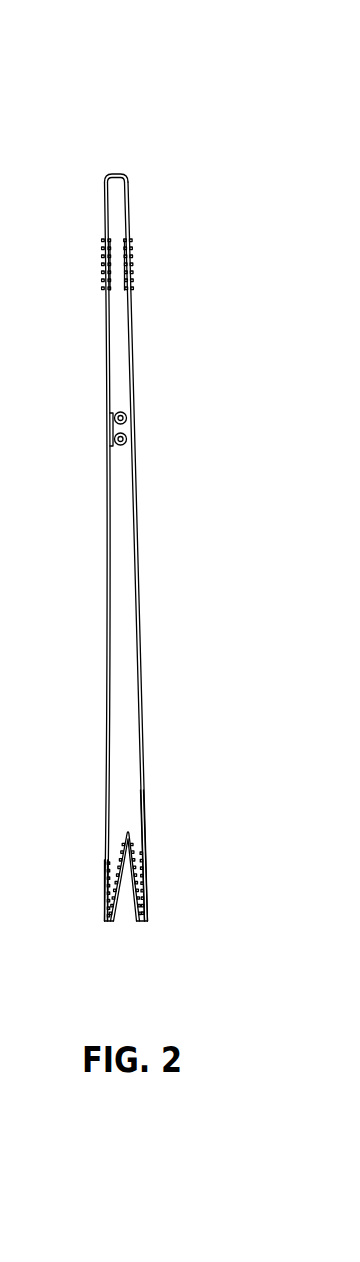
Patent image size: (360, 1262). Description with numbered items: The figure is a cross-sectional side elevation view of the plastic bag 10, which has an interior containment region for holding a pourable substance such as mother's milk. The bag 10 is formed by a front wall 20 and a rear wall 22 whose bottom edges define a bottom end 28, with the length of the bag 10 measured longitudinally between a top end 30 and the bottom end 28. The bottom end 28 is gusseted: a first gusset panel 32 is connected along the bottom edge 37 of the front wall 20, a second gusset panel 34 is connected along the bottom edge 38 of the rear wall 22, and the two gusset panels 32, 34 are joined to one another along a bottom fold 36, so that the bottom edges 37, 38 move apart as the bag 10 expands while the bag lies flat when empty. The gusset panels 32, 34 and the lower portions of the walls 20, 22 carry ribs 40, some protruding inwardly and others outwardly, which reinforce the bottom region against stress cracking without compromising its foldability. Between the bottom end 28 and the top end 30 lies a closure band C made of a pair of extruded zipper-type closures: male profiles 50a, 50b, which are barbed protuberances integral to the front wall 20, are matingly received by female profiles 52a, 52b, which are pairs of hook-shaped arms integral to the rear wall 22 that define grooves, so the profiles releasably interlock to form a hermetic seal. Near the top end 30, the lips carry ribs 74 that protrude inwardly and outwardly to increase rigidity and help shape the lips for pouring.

The plastic bag 10 is at (138, 68).
The front wall 20 is at (108, 657).
The rear wall 22 is at (137, 532).
The bottom end 28 is at (129, 887).
The top end 30 is at (116, 164).
The first gusset panel 32 is at (108, 862).
The second gusset panel 34 is at (130, 294).
The bottom fold 36 is at (143, 795).
The bottom edge of the front wall 37 is at (107, 920).
The bottom edge of the rear wall 38 is at (145, 921).
The ribs 40 is at (110, 832).
The male profile 50a is at (114, 439).
The male profile 50b is at (112, 415).
The female profile 52a is at (126, 447).
The female profile 52b is at (126, 412).
The ribs 74 is at (130, 242).
The closure band C is at (121, 424).